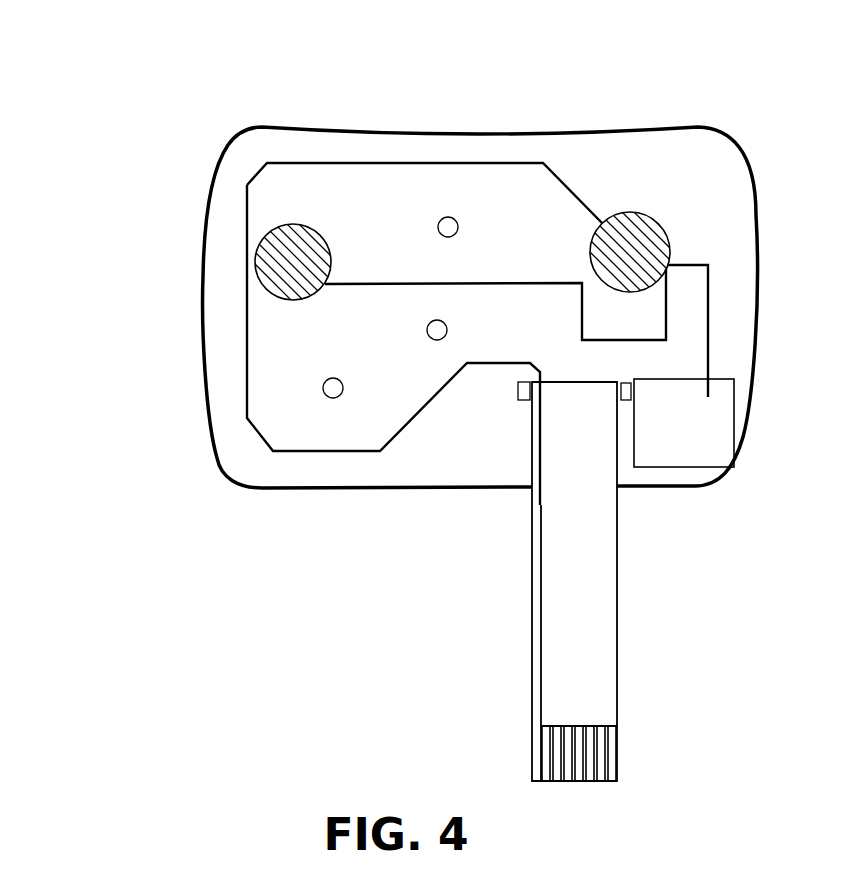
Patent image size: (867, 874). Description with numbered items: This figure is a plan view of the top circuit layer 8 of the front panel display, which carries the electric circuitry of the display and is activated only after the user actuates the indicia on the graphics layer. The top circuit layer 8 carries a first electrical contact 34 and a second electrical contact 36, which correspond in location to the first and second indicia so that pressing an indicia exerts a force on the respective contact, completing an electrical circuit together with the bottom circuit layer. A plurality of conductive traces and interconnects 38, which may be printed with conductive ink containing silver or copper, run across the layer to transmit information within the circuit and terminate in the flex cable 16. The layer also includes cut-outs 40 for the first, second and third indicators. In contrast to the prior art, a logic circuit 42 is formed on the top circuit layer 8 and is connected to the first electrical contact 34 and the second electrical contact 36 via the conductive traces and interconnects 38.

The top circuit layer 8 is at (120, 60).
The flex cable 16 is at (540, 610).
The first electrical contact 34 is at (288, 230).
The second electrical contact 36 is at (663, 225).
The conductive traces and interconnects 38 is at (490, 362).
The cut-outs 40 is at (441, 218).
The logic circuit 42 is at (698, 443).